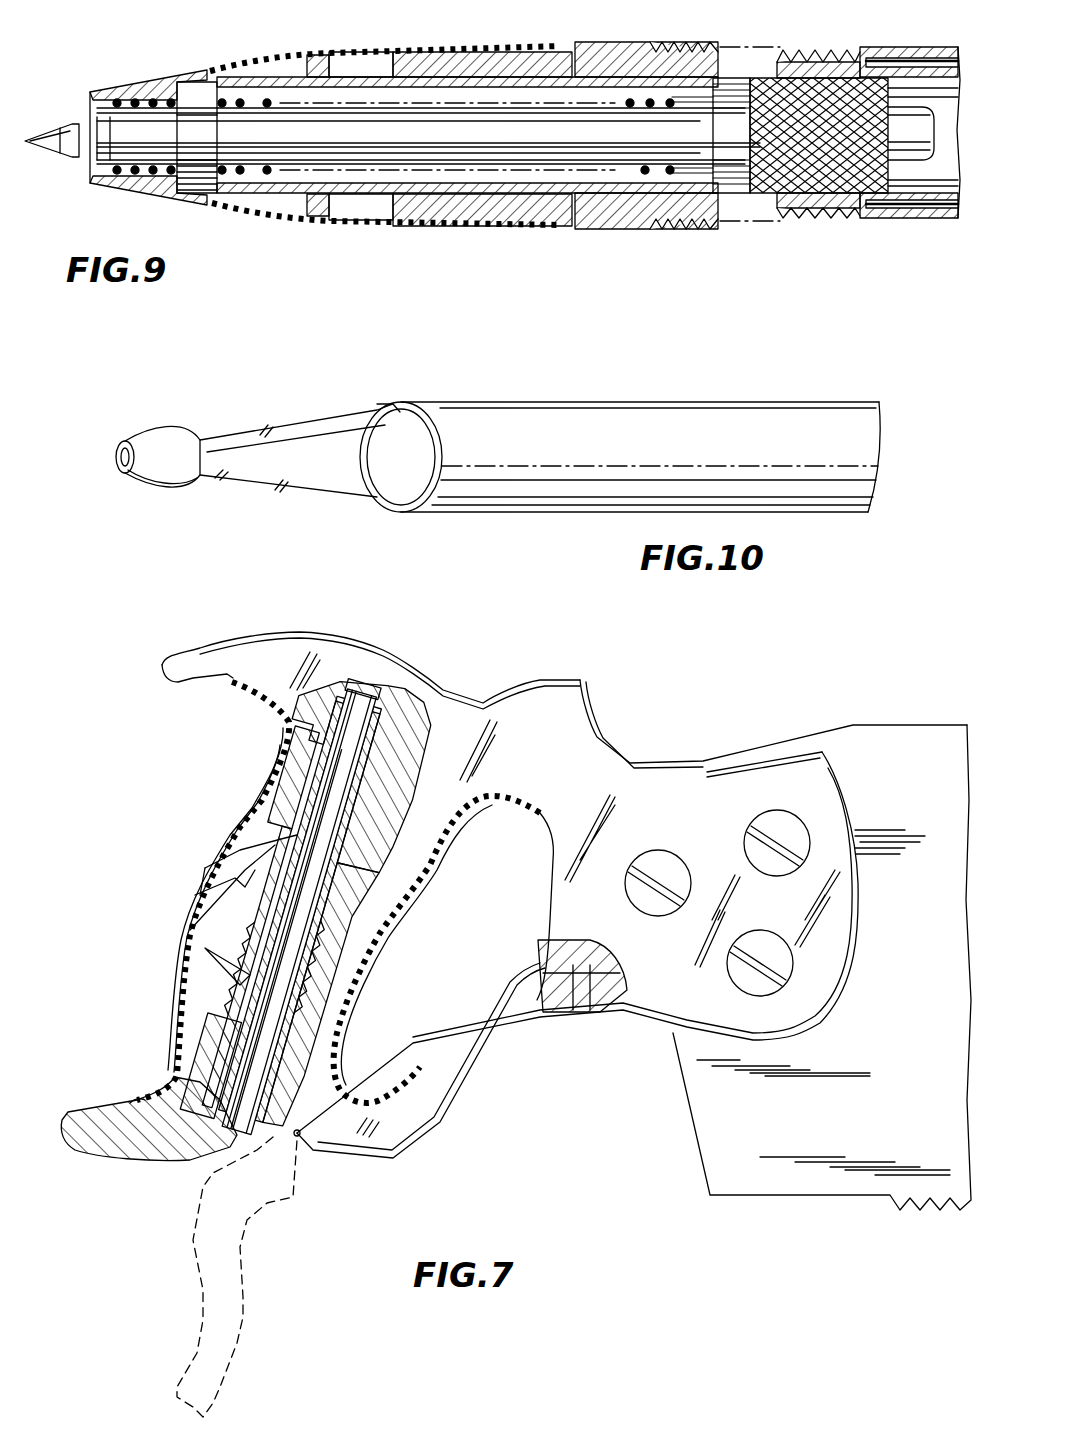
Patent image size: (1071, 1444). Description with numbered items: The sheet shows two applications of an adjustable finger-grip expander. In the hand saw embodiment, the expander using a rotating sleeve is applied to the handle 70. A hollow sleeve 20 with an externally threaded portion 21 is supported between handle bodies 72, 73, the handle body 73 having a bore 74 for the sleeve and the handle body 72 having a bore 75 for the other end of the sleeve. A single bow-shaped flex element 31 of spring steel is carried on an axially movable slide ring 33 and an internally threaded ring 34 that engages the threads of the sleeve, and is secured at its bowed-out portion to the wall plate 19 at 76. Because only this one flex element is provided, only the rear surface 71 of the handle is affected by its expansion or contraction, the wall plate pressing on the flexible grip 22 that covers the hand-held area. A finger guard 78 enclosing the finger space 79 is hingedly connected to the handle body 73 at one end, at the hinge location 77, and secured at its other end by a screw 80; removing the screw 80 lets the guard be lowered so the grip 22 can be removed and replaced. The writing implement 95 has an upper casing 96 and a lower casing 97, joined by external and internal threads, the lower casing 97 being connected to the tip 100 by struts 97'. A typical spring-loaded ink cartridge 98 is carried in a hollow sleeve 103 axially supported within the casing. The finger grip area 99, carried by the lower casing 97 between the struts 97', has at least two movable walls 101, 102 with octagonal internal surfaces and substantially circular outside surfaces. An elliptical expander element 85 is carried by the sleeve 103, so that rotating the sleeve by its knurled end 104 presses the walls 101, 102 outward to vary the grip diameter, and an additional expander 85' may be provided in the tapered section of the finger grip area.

In FIG. 9, the writing implement 95 is at (230, 56).
In FIG. 9, the tip 100 is at (100, 195).
In FIG. 10, the tip 100 is at (160, 433).
In FIG. 9, the finger grip area 99 is at (420, 42).
In FIG. 9, the additional expander 85' is at (320, 112).
In FIG. 9, the expander element 85 is at (487, 142).
In FIG. 9, the hollow sleeve 103 is at (280, 205).
In FIG. 9, the movable wall 102 is at (418, 228).
In FIG. 9, the movable wall 101 is at (472, 230).
In FIG. 9, the lower casing 97 is at (677, 117).
In FIG. 10, the lower casing 97 is at (620, 432).
In FIG. 10, the struts 97' is at (300, 430).
In FIG. 9, the spring-loaded ink cartridge 98 is at (718, 128).
In FIG. 9, the knurled end 104 is at (795, 205).
In FIG. 9, the upper casing 96 is at (810, 58).
In FIG. 7, the handle 70 is at (140, 1015).
In FIG. 7, the flexible grip 22 is at (237, 822).
In FIG. 7, the handle body 72 is at (420, 735).
In FIG. 7, the bore 75 is at (405, 715).
In FIG. 7, the hollow metal sleeve 20 is at (370, 852).
In FIG. 7, the slide ring 33 is at (355, 870).
In FIG. 7, the internally threaded ring 34 is at (305, 1003).
In FIG. 7, the externally threaded portion 21 is at (300, 1030).
In FIG. 7, the rear surface 71 is at (205, 868).
In FIG. 7, the securing point 76 is at (195, 895).
In FIG. 7, the wall plate 19 is at (190, 930).
In FIG. 7, the flex element 31 is at (205, 950).
In FIG. 7, the finger space 79 is at (468, 980).
In FIG. 7, the handle body 73 is at (98, 1155).
In FIG. 7, the bore 74 is at (210, 1135).
In FIG. 7, the pivot 77 is at (297, 1140).
In FIG. 7, the finger guard 78 is at (410, 1130).
In FIG. 7, the screw 80 is at (586, 960).